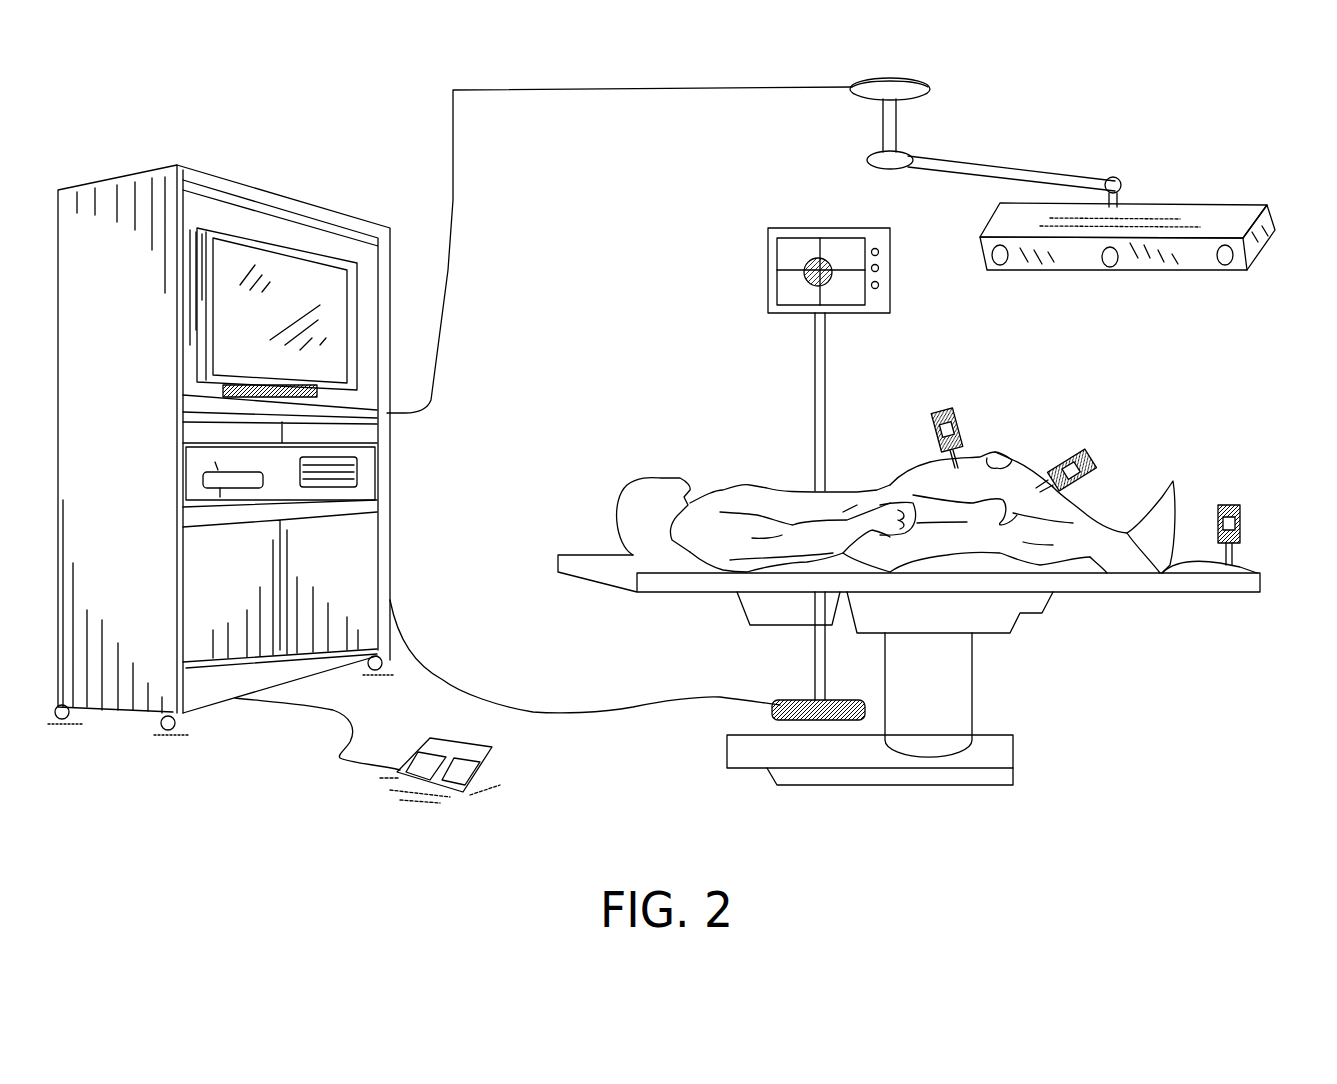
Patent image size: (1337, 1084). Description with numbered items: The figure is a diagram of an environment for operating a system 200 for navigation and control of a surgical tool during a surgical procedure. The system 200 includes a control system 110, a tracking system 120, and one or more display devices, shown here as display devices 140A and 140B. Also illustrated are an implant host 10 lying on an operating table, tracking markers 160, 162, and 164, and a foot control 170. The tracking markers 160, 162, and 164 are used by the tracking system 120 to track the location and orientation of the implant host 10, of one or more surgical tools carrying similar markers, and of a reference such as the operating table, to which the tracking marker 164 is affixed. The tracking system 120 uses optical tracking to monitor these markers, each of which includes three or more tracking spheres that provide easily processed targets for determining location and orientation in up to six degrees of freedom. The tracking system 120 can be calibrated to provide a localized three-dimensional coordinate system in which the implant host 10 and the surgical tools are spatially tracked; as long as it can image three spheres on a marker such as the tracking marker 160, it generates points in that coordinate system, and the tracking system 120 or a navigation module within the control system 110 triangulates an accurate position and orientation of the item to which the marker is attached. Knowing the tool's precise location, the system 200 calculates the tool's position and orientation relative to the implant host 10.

The system 200 is at (266, 102).
The control system 110 is at (366, 453).
The display device 140A is at (318, 275).
The display device 140B is at (782, 228).
The tracking system 120 is at (1145, 270).
The implant host 10 is at (766, 485).
The tracking marker 162 is at (935, 435).
The tracking marker 160 is at (1092, 457).
The tracking marker 164 is at (1245, 525).
The foot control 170 is at (495, 757).